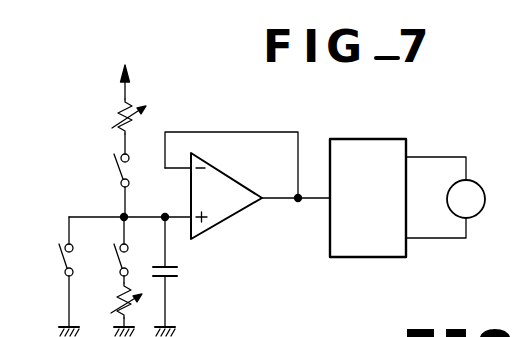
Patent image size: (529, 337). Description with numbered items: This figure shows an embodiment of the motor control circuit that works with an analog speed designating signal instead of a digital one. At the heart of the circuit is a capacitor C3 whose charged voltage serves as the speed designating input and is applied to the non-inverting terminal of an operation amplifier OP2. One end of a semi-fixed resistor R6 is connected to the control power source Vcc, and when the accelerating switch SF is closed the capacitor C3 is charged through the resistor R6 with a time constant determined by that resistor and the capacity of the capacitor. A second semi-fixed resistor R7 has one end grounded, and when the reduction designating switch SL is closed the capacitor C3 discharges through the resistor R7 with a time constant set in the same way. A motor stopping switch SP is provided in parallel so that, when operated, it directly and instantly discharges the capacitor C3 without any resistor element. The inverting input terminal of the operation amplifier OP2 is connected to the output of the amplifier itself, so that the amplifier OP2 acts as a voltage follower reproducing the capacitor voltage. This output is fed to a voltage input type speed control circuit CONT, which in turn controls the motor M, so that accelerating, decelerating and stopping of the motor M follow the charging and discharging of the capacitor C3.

The control power source Vcc is at (149, 81).
The semi-fixed resistor R6 is at (114, 123).
The accelerating switch SF is at (101, 183).
The motor stopping switch SP is at (48, 276).
The reduction designating switch SL is at (105, 249).
The semi-fixed resistor R7 is at (112, 306).
The capacitor C3 is at (181, 276).
The operation amplifier OP2 is at (246, 194).
The voltage input type speed control circuit CONT is at (368, 198).
The motor M is at (445, 197).